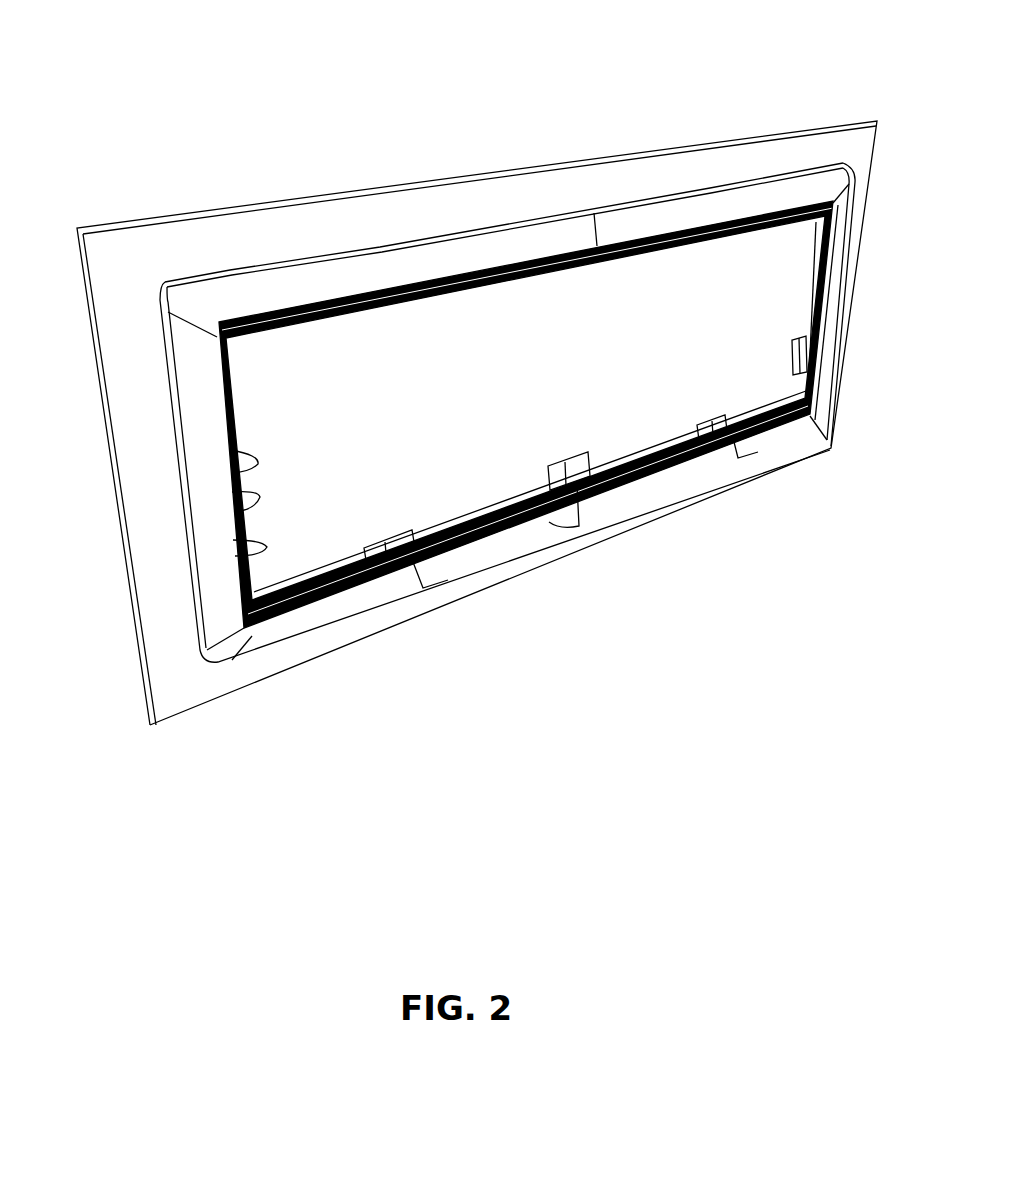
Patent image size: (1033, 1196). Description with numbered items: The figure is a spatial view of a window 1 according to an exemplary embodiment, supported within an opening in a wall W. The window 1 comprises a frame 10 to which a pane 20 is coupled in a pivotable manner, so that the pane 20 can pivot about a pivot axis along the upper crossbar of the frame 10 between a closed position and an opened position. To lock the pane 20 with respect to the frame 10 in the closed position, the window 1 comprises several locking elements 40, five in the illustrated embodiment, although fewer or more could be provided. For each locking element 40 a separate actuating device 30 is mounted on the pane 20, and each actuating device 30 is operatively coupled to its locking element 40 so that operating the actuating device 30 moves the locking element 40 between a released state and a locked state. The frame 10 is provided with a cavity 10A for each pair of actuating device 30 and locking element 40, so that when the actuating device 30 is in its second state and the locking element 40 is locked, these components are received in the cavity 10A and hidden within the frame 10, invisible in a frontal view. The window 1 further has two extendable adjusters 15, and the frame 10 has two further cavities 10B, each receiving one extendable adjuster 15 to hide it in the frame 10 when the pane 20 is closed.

The wall W is at (463, 200).
The window 1 is at (296, 274).
The extendable adjuster 15 is at (224, 420).
The frame 10 is at (635, 220).
The cavity 10A is at (263, 548).
The further cavity 10B is at (257, 463).
The pane 20 is at (690, 285).
The actuating device 30 is at (266, 507).
The locking element 40 is at (253, 497).